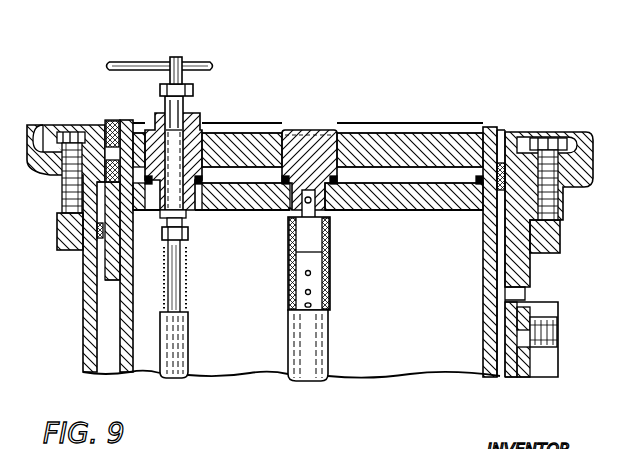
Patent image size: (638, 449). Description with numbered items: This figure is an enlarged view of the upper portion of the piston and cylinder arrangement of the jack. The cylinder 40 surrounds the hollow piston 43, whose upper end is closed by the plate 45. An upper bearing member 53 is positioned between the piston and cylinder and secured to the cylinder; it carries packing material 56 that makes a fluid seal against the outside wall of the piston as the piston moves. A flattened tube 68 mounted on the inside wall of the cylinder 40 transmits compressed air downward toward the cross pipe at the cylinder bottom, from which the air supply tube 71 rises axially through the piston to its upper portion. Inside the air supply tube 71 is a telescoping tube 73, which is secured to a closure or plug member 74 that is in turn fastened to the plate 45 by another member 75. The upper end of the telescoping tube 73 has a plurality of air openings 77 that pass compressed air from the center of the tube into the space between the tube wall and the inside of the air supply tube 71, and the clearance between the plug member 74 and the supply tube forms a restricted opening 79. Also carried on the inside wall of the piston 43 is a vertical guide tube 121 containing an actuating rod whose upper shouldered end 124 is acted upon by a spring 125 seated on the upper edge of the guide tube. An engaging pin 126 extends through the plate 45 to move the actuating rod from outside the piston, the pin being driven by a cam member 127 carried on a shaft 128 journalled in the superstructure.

The cylinder 40 is at (83, 325).
The piston 43 is at (140, 364).
The plate 45 is at (458, 212).
The upper bearing member 53 is at (510, 130).
The packing material 56 is at (110, 160).
The flattened tube 68 is at (533, 373).
The air supply tube 71 is at (329, 360).
The telescoping tube 73 is at (312, 305).
The closure or plug member 74 is at (306, 232).
The member 75 is at (318, 133).
The air openings 77 is at (311, 292).
The restricted opening 79 is at (291, 211).
The guide tube 121 is at (189, 330).
The upper shouldered end 124 is at (189, 235).
The spring 125 is at (189, 271).
The engaging pin 126 is at (190, 104).
The cam member 127 is at (176, 56).
The shaft 128 is at (127, 61).